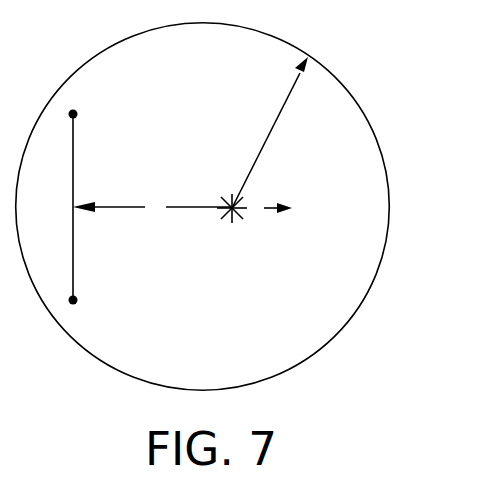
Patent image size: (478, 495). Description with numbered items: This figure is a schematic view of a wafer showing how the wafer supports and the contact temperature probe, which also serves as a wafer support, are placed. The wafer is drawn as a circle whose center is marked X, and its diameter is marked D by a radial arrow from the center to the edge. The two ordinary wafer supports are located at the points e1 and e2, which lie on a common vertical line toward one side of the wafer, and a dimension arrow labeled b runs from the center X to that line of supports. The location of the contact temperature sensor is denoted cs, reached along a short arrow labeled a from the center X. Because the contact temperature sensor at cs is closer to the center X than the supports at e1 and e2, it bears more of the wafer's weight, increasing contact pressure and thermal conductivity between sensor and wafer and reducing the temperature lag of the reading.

The wafer support location e1 is at (96, 113).
The wafer support location e2 is at (96, 300).
The distance from center to chord b is at (152, 206).
The direction of center shift a is at (270, 207).
The contact temperature sensor location cs is at (292, 208).
The wafer diameter D is at (277, 118).
The wafer center X is at (240, 216).